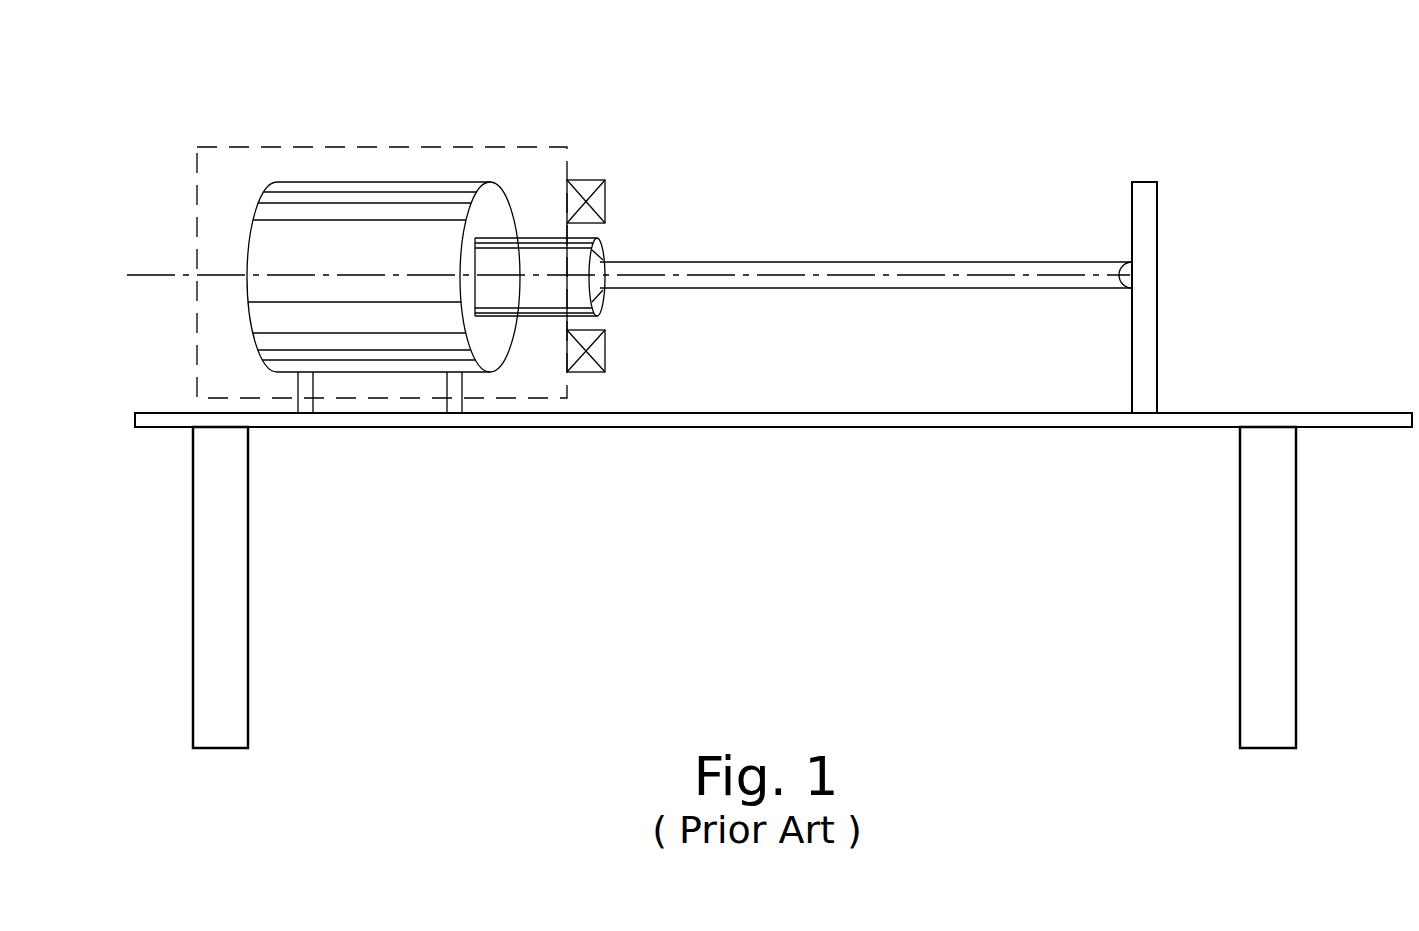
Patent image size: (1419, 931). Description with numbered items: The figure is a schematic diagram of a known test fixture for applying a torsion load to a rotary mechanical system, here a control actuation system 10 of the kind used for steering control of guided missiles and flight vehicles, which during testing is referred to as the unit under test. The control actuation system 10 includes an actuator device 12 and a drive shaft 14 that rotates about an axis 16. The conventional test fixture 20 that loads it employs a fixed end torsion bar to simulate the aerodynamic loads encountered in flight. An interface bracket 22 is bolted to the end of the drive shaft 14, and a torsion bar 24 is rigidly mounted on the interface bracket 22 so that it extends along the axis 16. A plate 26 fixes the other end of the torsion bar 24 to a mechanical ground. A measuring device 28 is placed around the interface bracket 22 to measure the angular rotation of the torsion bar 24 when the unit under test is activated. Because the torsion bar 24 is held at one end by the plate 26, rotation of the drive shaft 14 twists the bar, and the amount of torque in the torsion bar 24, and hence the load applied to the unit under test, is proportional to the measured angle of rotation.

The control actuation system 10 is at (260, 145).
The actuator device 12 is at (378, 205).
The drive shaft 14 is at (543, 263).
The axis 16 is at (160, 275).
The test fixture 20 is at (1090, 111).
The interface bracket 22 is at (605, 253).
The torsion bar 24 is at (835, 262).
The plate 26 is at (1158, 215).
The measuring device 28 is at (585, 179).